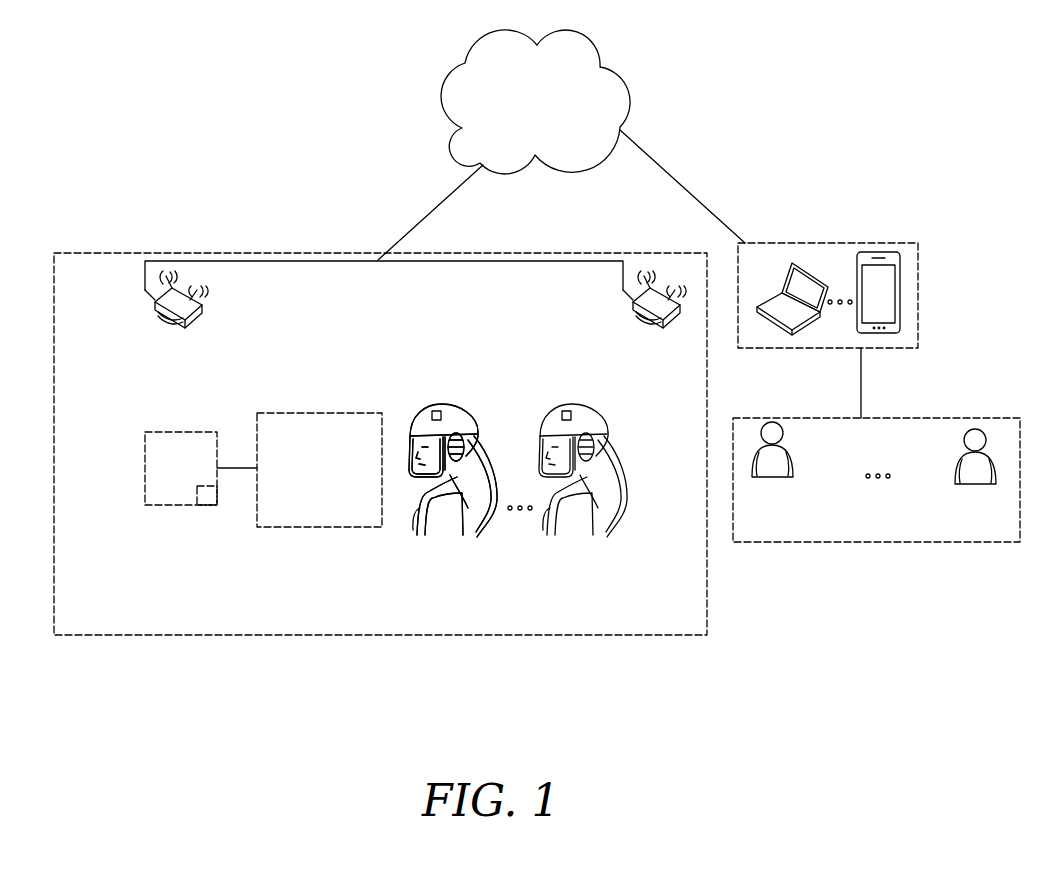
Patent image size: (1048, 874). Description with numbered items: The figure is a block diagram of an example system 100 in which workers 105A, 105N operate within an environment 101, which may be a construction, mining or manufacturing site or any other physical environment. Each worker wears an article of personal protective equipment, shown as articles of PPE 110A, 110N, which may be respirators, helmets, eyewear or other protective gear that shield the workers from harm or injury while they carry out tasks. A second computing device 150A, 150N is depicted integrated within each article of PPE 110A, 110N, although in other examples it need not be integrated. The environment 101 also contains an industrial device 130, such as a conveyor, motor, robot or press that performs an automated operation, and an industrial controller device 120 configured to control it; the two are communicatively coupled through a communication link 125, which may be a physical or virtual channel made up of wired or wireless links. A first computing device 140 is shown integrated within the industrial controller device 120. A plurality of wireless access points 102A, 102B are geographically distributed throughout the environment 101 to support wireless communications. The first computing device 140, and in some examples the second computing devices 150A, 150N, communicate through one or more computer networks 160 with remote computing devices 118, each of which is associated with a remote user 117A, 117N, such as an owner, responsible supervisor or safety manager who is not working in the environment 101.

The system 100 is at (852, 40).
The environment 101 is at (190, 251).
The wireless access point 102A is at (152, 300).
The wireless access point 102B is at (630, 302).
The worker 105A is at (416, 512).
The worker 105N is at (544, 514).
The article of personal protective equipment 110A is at (467, 405).
The article of personal protective equipment 110N is at (597, 405).
The remote user 117A is at (793, 463).
The remote user 117N is at (955, 469).
The remote computing devices 118 is at (918, 295).
The industrial controller device 120 is at (197, 479).
The communication link 125 is at (243, 469).
The industrial device 130 is at (335, 479).
The first computing device 140 is at (207, 502).
The second computing device 150A is at (436, 410).
The second computing device 150N is at (566, 410).
The computer networks 160 is at (551, 111).